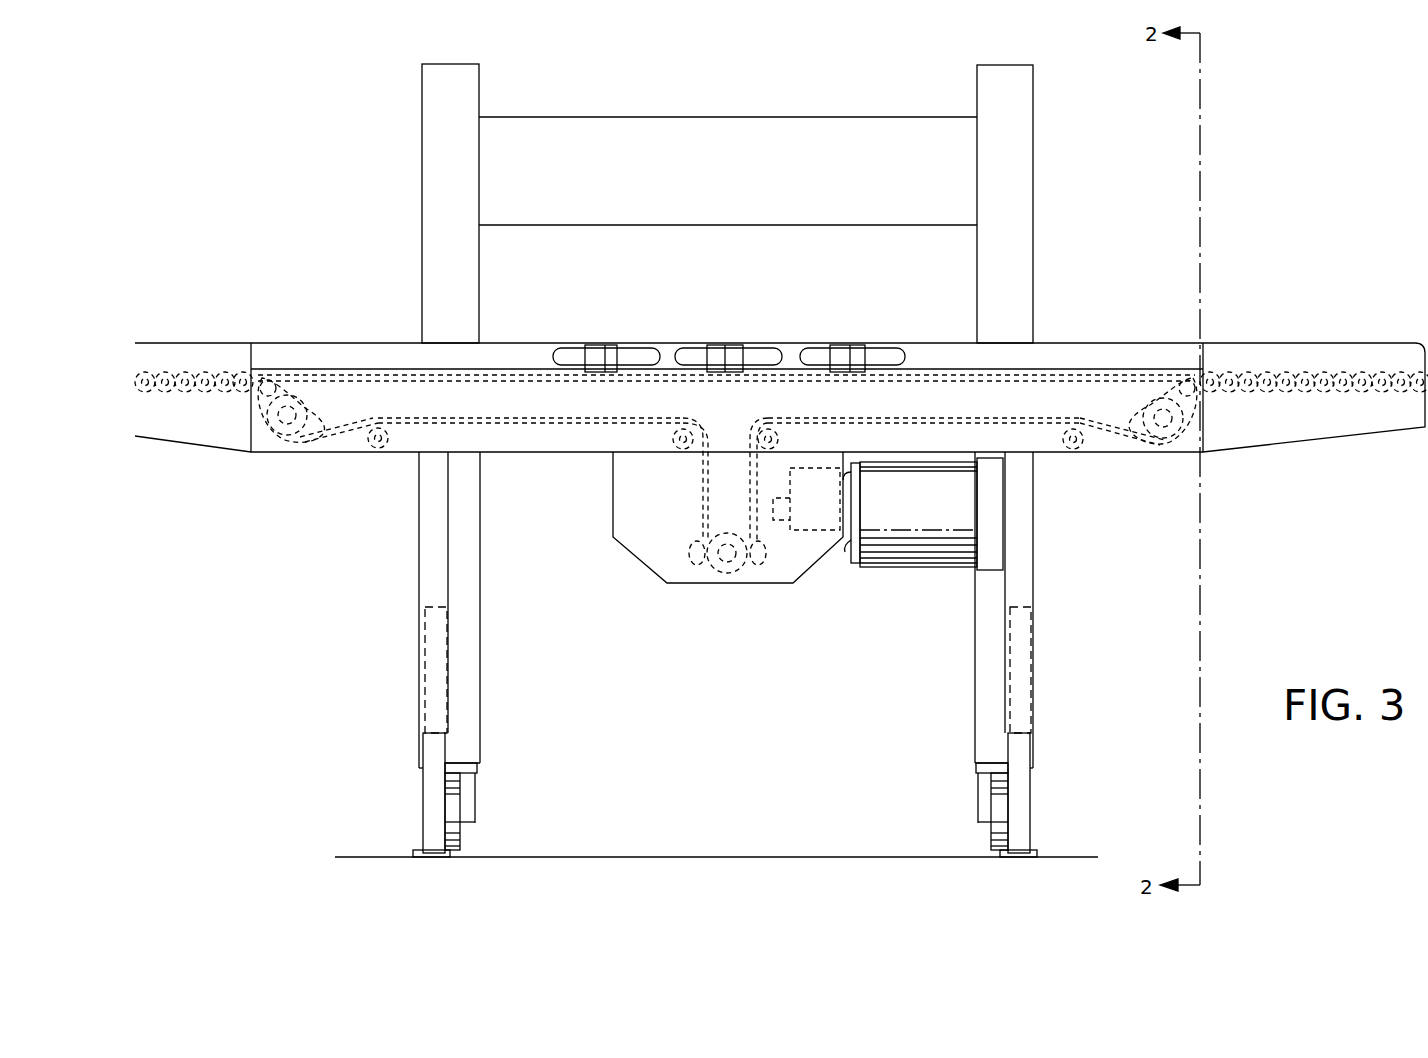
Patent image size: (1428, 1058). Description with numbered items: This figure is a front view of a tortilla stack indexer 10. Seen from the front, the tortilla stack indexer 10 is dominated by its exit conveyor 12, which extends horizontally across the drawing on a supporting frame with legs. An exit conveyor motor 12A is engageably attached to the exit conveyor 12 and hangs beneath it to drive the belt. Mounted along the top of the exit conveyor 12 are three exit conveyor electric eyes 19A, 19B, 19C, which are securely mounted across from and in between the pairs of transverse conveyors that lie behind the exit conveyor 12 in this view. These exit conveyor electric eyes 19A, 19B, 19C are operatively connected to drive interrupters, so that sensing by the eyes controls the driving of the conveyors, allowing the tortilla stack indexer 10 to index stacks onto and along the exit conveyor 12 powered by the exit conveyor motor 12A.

The tortilla stack indexer 10 is at (729, 87).
The exit conveyor 12 is at (1107, 376).
The exit conveyor motor 12A is at (921, 548).
The exit conveyor electric eye 19A is at (842, 347).
The exit conveyor electric eye 19B is at (720, 347).
The exit conveyor electric eye 19C is at (596, 347).